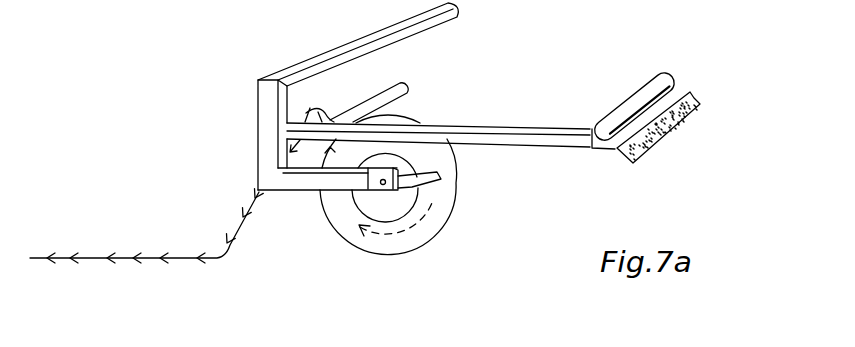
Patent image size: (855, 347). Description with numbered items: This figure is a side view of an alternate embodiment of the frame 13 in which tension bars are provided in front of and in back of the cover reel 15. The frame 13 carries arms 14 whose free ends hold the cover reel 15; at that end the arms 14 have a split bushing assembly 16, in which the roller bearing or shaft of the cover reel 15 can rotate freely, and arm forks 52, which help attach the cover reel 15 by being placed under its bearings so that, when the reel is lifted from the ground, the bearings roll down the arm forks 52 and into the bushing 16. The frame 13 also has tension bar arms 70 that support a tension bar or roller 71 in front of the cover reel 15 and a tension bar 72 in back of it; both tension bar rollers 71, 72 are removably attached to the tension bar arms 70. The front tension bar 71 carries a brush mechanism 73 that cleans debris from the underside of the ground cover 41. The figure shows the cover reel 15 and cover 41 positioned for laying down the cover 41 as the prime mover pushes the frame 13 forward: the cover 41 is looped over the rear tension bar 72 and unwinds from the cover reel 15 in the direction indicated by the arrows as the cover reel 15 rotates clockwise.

The frame 13 is at (265, 113).
The arms 14 is at (301, 182).
The cover reel 15 is at (379, 206).
The split bushing assembly 16 is at (392, 178).
The ground cover 41 is at (184, 253).
The arm forks 52 is at (439, 180).
The tension bar arms 70 is at (535, 140).
The tension bar or roller 71 is at (620, 98).
The tension bar 72 is at (374, 90).
The brush mechanism 73 is at (677, 127).